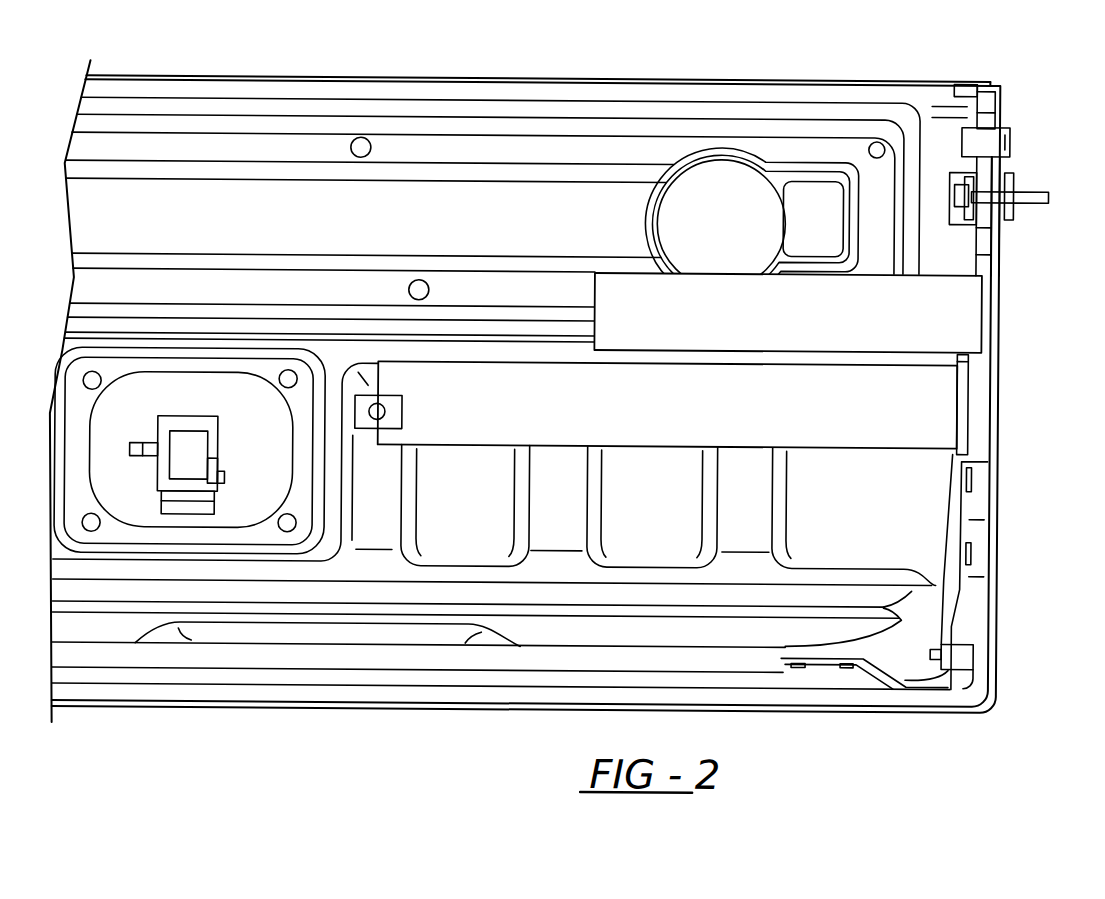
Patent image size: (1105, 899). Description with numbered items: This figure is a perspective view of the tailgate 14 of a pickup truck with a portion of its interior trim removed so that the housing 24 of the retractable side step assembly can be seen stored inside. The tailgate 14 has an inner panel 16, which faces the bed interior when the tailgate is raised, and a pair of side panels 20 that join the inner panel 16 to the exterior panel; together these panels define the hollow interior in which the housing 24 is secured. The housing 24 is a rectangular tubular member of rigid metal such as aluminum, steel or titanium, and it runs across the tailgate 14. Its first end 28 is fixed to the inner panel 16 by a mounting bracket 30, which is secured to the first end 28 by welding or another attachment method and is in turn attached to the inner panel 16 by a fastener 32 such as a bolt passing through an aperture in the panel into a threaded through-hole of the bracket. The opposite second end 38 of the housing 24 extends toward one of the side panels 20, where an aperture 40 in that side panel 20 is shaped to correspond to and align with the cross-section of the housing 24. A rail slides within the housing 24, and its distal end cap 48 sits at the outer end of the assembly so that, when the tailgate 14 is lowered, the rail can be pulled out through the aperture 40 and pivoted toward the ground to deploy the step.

The tailgate 14 is at (909, 70).
The inner panel 16 is at (531, 227).
The side panel 20 is at (998, 258).
The housing 24 is at (711, 417).
The first end 28 is at (447, 442).
The mounting bracket 30 is at (370, 426).
The fastener 32 is at (385, 407).
The second end 38 is at (938, 402).
The aperture 40 is at (967, 455).
The end cap 48 is at (968, 440).